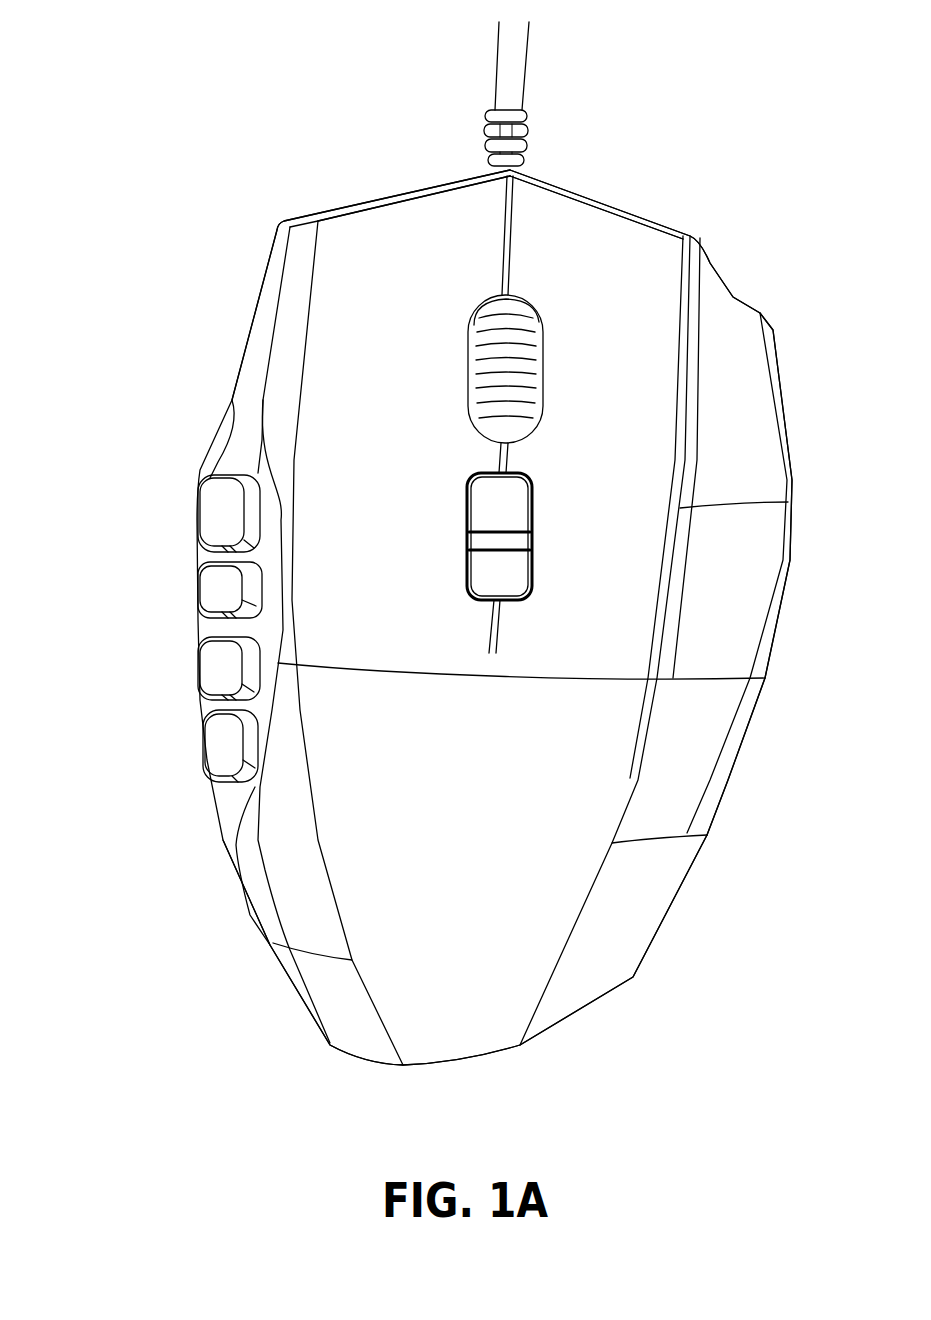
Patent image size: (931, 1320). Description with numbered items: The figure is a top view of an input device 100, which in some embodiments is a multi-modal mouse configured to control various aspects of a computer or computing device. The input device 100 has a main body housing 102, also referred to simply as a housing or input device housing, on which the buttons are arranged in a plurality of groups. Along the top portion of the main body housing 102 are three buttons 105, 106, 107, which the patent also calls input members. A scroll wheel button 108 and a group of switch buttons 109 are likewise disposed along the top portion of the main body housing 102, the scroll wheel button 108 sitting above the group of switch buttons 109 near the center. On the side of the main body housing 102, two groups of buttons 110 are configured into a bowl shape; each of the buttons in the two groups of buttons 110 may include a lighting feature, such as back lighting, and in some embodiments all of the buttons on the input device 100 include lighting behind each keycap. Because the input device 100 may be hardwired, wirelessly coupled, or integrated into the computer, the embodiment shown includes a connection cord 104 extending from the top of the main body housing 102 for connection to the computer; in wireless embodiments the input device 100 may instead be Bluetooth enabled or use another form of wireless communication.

The input device 100 is at (142, 1045).
The main body housing 102 is at (315, 1027).
The connection cord 104 is at (492, 47).
The button 105 is at (392, 250).
The button 106 is at (583, 250).
The button 107 is at (733, 340).
The scroll wheel button 108 is at (466, 352).
The group of switch buttons 109 is at (464, 535).
The two groups of buttons 110 is at (196, 666).